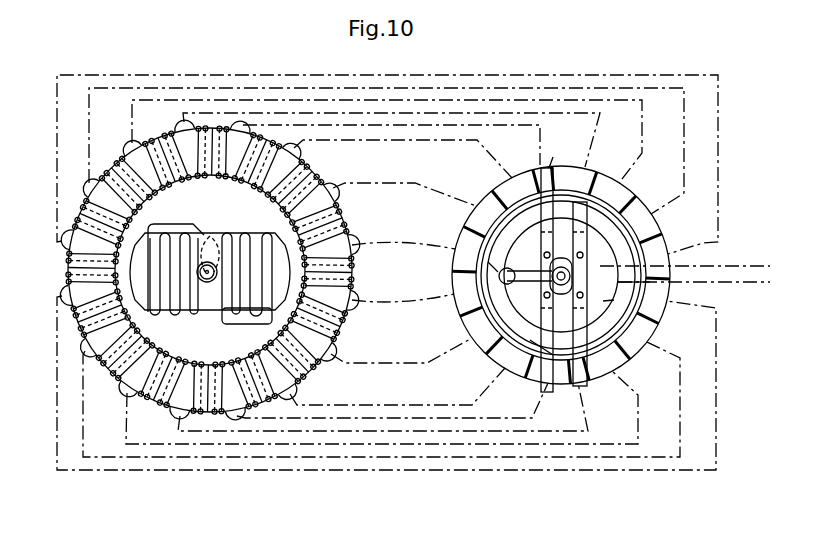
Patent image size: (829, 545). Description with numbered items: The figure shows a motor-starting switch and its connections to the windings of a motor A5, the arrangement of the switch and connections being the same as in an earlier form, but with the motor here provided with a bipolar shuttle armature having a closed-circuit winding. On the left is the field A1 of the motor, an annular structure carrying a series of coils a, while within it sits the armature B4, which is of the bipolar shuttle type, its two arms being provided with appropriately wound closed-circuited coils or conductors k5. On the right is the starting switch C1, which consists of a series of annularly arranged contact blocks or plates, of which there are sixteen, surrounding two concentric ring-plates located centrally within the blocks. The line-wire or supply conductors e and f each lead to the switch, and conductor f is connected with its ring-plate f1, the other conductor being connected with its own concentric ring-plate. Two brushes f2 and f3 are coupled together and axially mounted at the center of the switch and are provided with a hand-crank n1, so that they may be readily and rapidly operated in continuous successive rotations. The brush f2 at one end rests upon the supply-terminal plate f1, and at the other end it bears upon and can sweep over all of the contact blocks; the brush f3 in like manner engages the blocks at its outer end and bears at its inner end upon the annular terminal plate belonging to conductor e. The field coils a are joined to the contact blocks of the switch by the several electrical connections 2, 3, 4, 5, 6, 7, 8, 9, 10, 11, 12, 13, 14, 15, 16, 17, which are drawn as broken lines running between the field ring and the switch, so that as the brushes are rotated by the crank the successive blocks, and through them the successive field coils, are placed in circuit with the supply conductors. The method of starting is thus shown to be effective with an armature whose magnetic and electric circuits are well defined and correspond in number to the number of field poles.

The electrical connection 2 is at (403, 159).
The electrical connection 3 is at (404, 194).
The electrical connection 4 is at (403, 252).
The electrical connection 5 is at (403, 296).
The electrical connection 6 is at (401, 344).
The electrical connection 7 is at (397, 384).
The electrical connection 8 is at (392, 400).
The electrical connection 9 is at (383, 407).
The electrical connection 10 is at (382, 407).
The electrical connection 11 is at (381, 399).
The electrical connection 12 is at (386, 383).
The electrical connection 13 is at (387, 164).
The electrical connection 14 is at (386, 151).
The electrical connection 15 is at (387, 141).
The electrical connection 16 is at (391, 139).
The electrical connection 17 is at (391, 144).
The motor A5 is at (196, 270).
The field A1 is at (230, 200).
The armature B4 is at (210, 271).
The closed-circuited coils k5 is at (210, 271).
The field coils a is at (210, 270).
The starting switch C1 is at (561, 277).
The ring-plate f1 is at (489, 268).
The brush f2 is at (583, 235).
The brush f3 is at (547, 326).
The hand-crank n1 is at (527, 271).
The supply conductor e is at (694, 275).
The supply conductor f is at (685, 256).